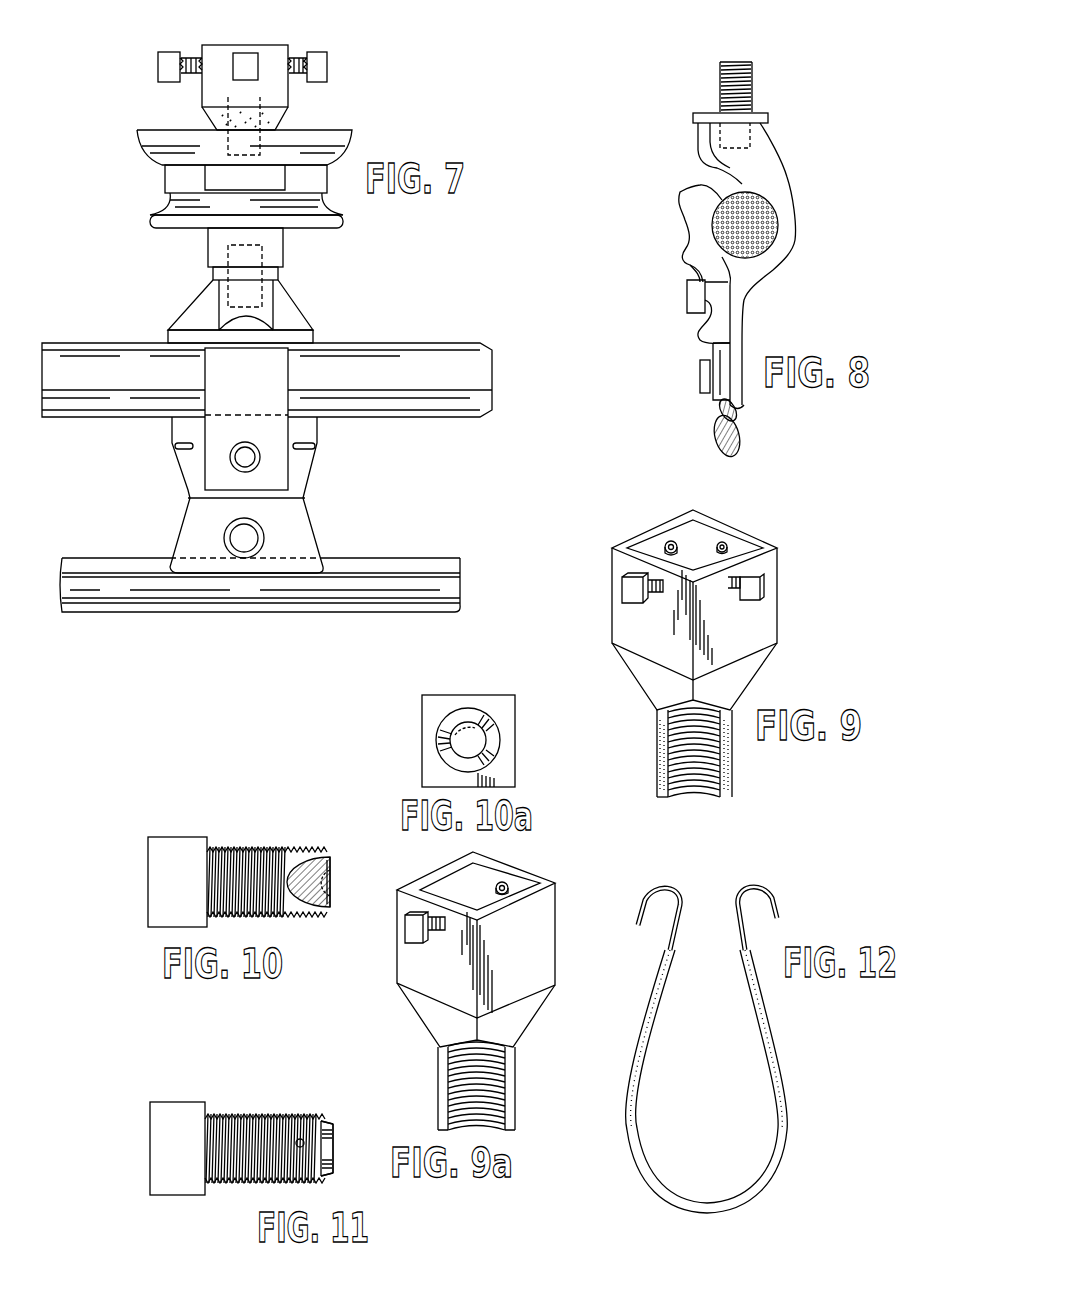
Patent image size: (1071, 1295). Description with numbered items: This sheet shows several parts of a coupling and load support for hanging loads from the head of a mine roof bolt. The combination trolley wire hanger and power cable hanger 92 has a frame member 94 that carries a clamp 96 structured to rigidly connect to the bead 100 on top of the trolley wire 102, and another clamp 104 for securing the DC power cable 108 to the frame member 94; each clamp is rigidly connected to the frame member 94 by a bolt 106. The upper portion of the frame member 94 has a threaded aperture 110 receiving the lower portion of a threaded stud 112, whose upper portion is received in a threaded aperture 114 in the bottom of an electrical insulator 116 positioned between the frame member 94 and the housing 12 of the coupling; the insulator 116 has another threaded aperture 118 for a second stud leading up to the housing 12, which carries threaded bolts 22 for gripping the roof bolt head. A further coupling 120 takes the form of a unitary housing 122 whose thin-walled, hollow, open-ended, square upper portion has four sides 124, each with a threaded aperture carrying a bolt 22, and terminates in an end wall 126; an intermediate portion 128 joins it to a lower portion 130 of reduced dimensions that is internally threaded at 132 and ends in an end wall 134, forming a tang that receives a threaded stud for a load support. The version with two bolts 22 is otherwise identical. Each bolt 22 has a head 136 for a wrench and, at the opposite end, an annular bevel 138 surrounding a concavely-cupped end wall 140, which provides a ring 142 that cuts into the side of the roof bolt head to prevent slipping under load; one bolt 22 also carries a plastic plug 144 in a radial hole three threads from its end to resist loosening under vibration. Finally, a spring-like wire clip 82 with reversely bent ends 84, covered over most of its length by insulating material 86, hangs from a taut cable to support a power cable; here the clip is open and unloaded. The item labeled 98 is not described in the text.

In FIG. 7, the housing 12 is at (262, 36).
In FIG. 7, the threaded bolt 22 is at (240, 70).
In FIG. 9, the threaded bolt 22 is at (750, 588).
In FIG. 10, the threaded bolt 22 is at (251, 862).
In FIG. 9A, the threaded bolt 22 is at (507, 885).
In FIG. 11, the threaded bolt 22 is at (248, 1136).
In FIG. 12, the spring-like wire clip 82 is at (748, 1050).
In FIG. 12, the reversely bent ends 84 is at (728, 892).
In FIG. 12, the insulating material 86 is at (767, 1178).
In FIG. 7, the combination trolley wire hanger and power cable hanger 92 is at (186, 291).
In FIG. 8, the combination trolley wire hanger and power cable hanger 92 is at (858, 165).
In FIG. 7, the frame member 94 is at (290, 318).
In FIG. 8, the frame member 94 is at (753, 165).
In FIG. 7, the clamp 96 is at (290, 523).
In FIG. 8, the clamp 96 is at (715, 343).
In FIG. 7, the lower hole 98 is at (250, 543).
In FIG. 8, the lower hole 98 is at (702, 380).
In FIG. 7, the bead 100 is at (148, 565).
In FIG. 8, the bead 100 is at (736, 403).
In FIG. 7, the trolley wire 102 is at (73, 590).
In FIG. 8, the trolley wire 102 is at (740, 445).
In FIG. 7, the clamp 104 is at (262, 365).
In FIG. 8, the clamp 104 is at (700, 197).
In FIG. 7, the bolt 106 is at (246, 450).
In FIG. 8, the bolt 106 is at (692, 303).
In FIG. 7, the power cable 108 is at (430, 363).
In FIG. 8, the power cable 108 is at (773, 227).
In FIG. 7, the threaded aperture 110 is at (253, 297).
In FIG. 8, the threaded aperture 110 is at (730, 132).
In FIG. 8, the threaded stud 112 is at (750, 93).
In FIG. 7, the threaded aperture 114 is at (250, 258).
In FIG. 7, the electrical insulator 116 is at (182, 175).
In FIG. 7, the threaded aperture 118 is at (250, 143).
In FIG. 9, the coupling 120 is at (719, 655).
In FIG. 9A, the coupling 120 is at (477, 983).
In FIG. 9, the unitary housing 122 is at (763, 610).
In FIG. 9A, the unitary housing 122 is at (375, 946).
In FIG. 9, the sides 124 is at (652, 547).
In FIG. 9A, the sides 124 is at (532, 977).
In FIG. 9, the end wall 126 is at (702, 493).
In FIG. 9A, the end wall 126 is at (502, 908).
In FIG. 9, the intermediate portion 128 is at (653, 678).
In FIG. 9A, the intermediate portion 128 is at (510, 1022).
In FIG. 9, the lower portion 130 is at (723, 768).
In FIG. 9A, the lower portion 130 is at (501, 1086).
In FIG. 9, the internal threads 132 is at (702, 772).
In FIG. 9A, the internal threads 132 is at (480, 1080).
In FIG. 9, the end wall 134 is at (660, 787).
In FIG. 9A, the end wall 134 is at (443, 1127).
In FIG. 10A, the head 136 is at (487, 703).
In FIG. 10, the head 136 is at (172, 853).
In FIG. 11, the head 136 is at (164, 1130).
In FIG. 10A, the annular bevel 138 is at (457, 717).
In FIG. 10, the annular bevel 138 is at (333, 903).
In FIG. 11, the annular bevel 138 is at (326, 1171).
In FIG. 10A, the concavely-cupped end wall 140 is at (460, 747).
In FIG. 10, the concavely-cupped end wall 140 is at (330, 890).
In FIG. 10A, the ring 142 is at (488, 745).
In FIG. 10, the ring 142 is at (330, 867).
In FIG. 11, the ring 142 is at (331, 1152).
In FIG. 11, the plastic plug 144 is at (303, 1137).